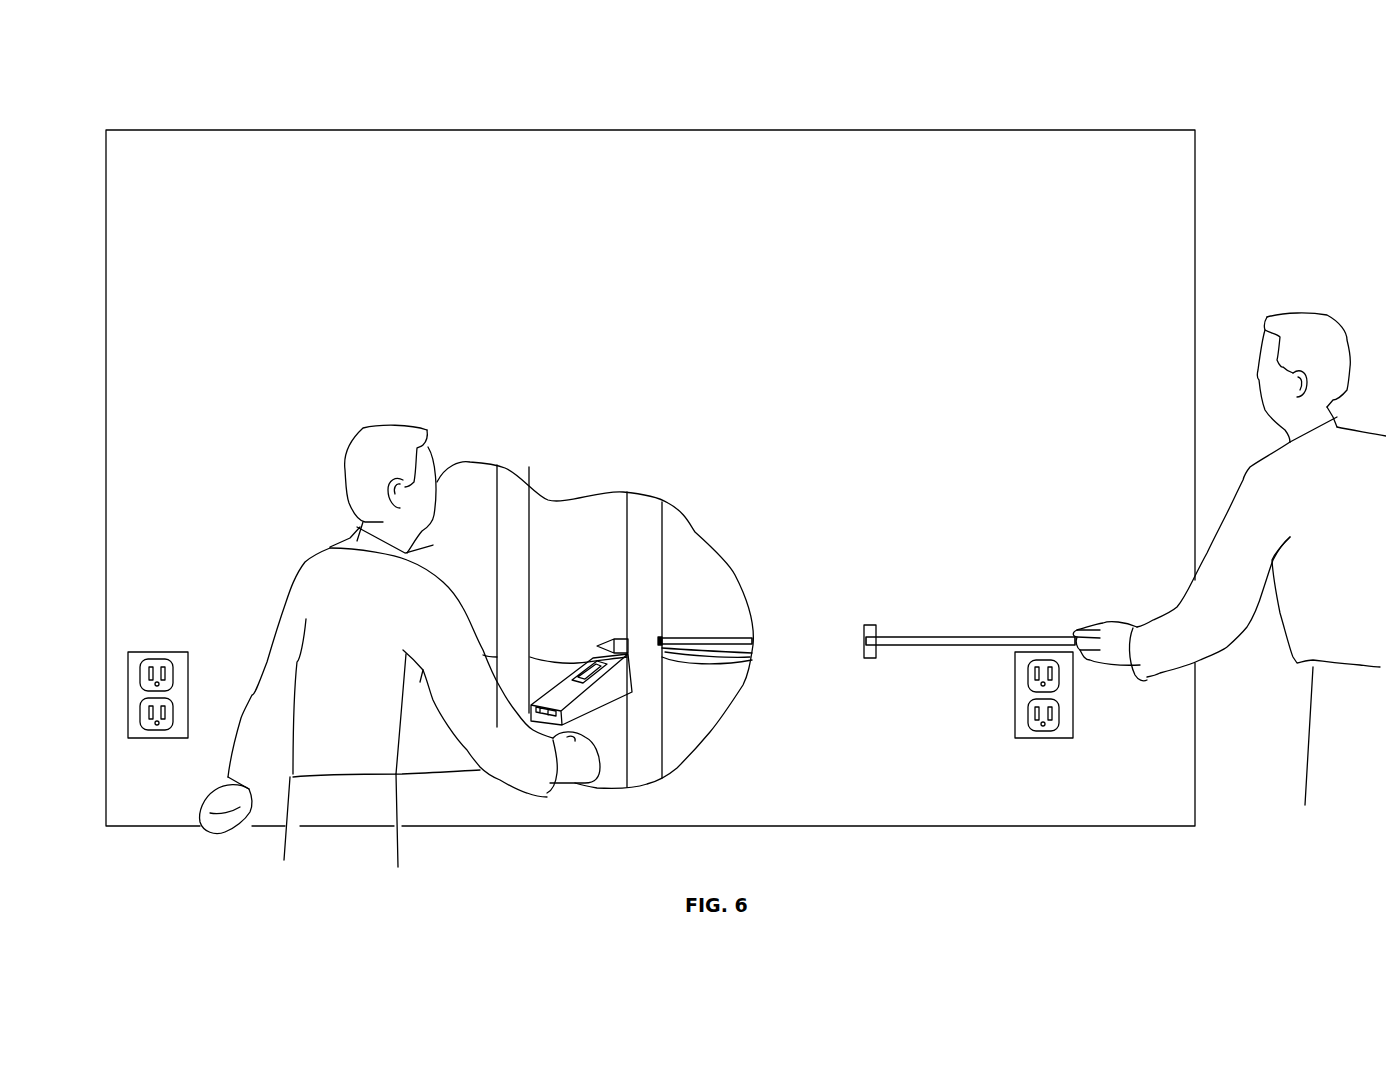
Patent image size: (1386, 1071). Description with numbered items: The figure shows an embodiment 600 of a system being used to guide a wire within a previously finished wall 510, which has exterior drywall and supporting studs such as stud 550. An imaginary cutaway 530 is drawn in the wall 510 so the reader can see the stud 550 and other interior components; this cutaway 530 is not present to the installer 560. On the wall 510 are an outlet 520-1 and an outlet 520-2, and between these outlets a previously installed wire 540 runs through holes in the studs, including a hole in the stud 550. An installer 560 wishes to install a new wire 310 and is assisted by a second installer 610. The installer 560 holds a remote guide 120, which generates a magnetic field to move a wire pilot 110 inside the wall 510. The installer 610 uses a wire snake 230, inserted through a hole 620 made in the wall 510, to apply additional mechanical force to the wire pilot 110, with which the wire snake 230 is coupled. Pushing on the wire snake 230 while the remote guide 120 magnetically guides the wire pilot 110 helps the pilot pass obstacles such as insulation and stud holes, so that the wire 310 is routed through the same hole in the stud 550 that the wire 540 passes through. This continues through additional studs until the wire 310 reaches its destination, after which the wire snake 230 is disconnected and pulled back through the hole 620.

The embodiment of a system being used to guide a wire within a wall 600 is at (101, 90).
The wall 510 is at (106, 288).
The outlet 520-1 is at (172, 652).
The outlet 520-2 is at (1024, 739).
The imaginary cutaway 530 is at (608, 492).
The wire 540 is at (561, 658).
The stud 550 is at (495, 540).
The installer 560 is at (314, 553).
The installer 610 is at (1250, 470).
The hole 620 is at (868, 624).
The wire snake 230 is at (720, 637).
The wire 310 is at (695, 657).
The wire pilot 110 is at (603, 633).
The remote guide 120 is at (607, 713).